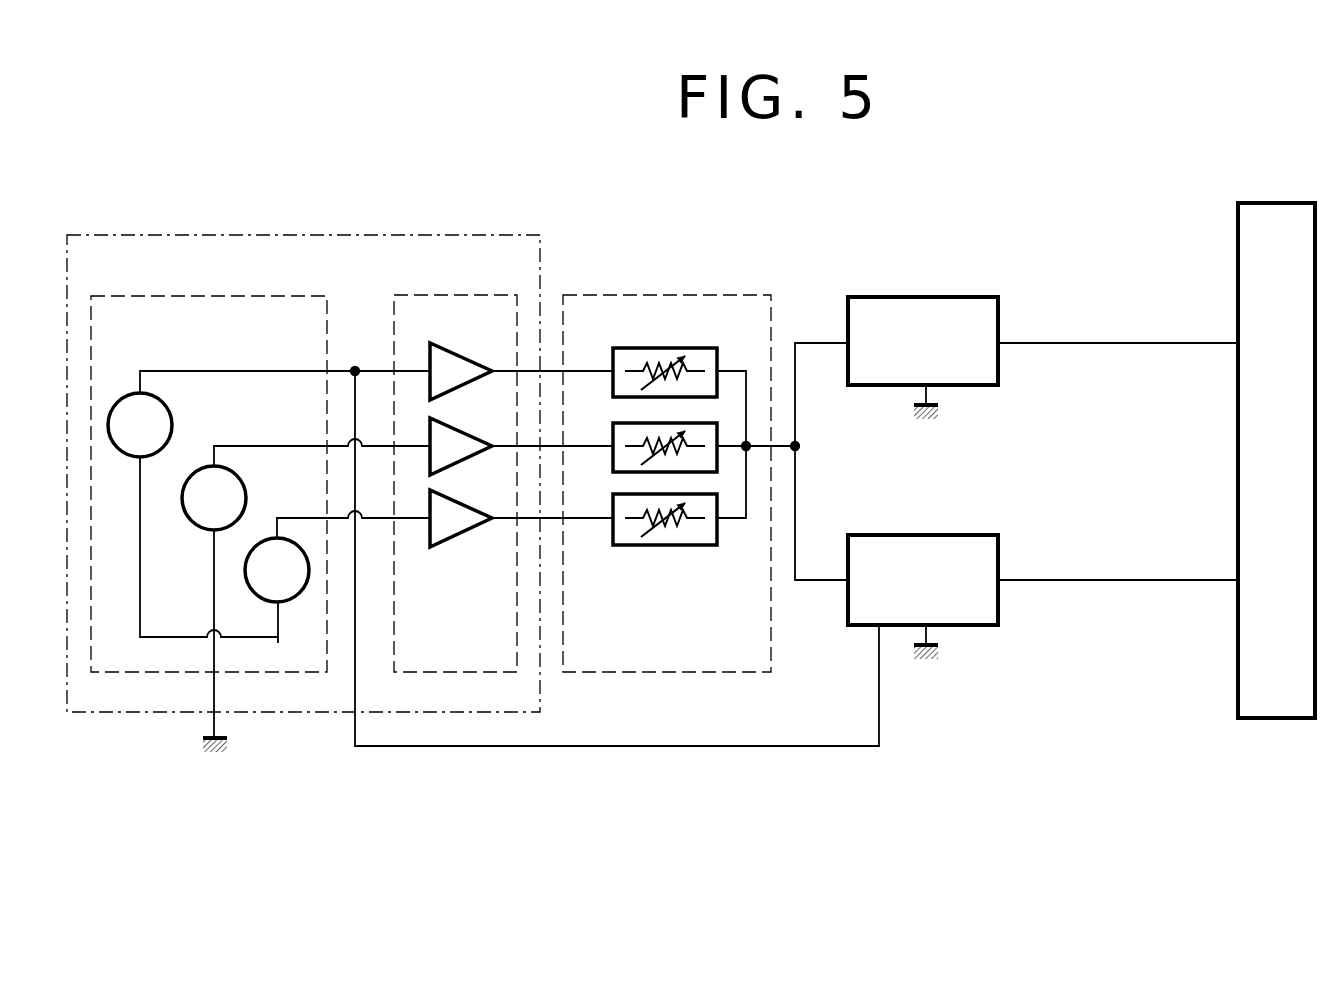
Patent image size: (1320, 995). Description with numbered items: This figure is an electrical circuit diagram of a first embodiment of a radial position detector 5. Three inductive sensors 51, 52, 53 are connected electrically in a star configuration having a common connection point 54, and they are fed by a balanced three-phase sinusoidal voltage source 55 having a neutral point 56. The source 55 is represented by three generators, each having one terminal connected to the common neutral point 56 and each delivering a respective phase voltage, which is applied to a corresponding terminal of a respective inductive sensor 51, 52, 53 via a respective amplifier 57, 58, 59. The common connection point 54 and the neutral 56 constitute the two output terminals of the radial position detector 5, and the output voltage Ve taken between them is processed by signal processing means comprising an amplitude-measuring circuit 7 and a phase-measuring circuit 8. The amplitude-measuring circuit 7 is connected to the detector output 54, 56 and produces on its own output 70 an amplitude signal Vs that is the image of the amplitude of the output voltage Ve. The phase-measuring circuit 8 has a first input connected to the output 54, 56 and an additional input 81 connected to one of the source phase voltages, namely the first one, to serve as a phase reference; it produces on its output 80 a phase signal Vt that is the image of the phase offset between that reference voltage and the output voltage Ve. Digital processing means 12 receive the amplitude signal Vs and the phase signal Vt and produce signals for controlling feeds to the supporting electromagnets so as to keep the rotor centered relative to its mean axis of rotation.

The radial position detector 5 is at (608, 758).
The balanced three-phase sinusoidal voltage source 55 is at (303, 252).
The amplifier 57 is at (446, 368).
The amplifier 58 is at (453, 452).
The amplifier 59 is at (453, 520).
The inductive sensor 51 is at (684, 360).
The inductive sensor 52 is at (627, 432).
The inductive sensor 53 is at (690, 528).
The common connection point 54 is at (750, 452).
The amplitude-measuring circuit 7 is at (955, 315).
The phase-measuring circuit 8 is at (957, 553).
The neutral point 56 is at (202, 748).
The additional input 81 is at (882, 700).
The output 70 is at (1090, 342).
The output 80 is at (1096, 579).
The digital processing means 12 is at (1275, 222).